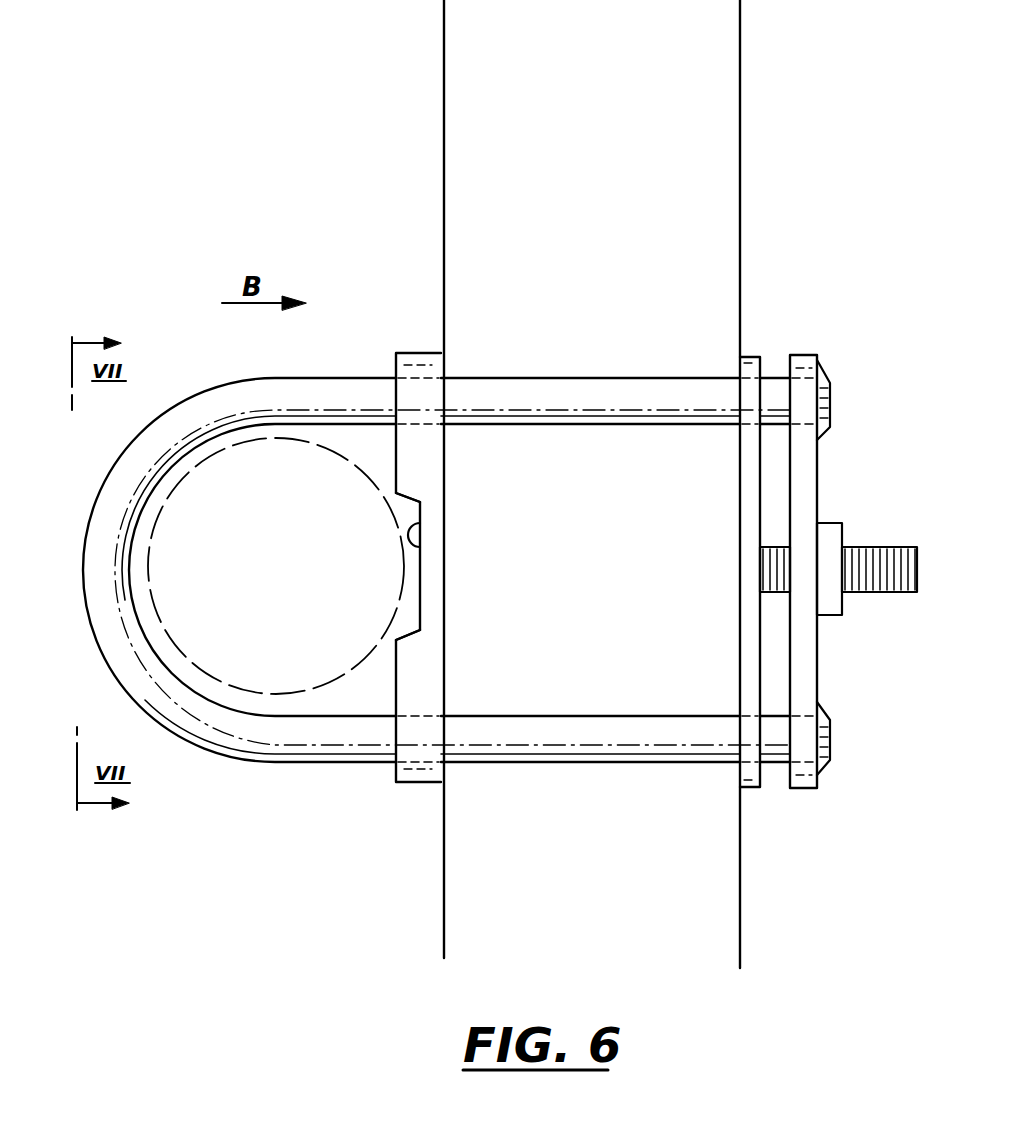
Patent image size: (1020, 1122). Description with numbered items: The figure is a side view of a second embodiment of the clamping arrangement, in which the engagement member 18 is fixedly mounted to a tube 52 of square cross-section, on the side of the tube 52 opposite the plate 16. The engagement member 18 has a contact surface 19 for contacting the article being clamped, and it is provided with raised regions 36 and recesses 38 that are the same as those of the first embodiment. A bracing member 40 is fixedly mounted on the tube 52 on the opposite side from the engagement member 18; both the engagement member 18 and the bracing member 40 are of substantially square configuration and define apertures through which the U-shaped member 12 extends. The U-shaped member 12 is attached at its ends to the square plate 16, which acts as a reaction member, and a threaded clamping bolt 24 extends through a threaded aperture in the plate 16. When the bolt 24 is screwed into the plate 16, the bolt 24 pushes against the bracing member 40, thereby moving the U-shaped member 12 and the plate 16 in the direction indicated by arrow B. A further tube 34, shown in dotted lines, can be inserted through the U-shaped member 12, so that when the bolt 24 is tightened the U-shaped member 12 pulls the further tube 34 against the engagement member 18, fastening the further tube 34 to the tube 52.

The tube 52 is at (705, 108).
The first U-shaped member 12 is at (607, 380).
The raised region 36 is at (388, 356).
The recess 38 is at (410, 546).
The engagement member 18 is at (392, 492).
The contact surface 19 is at (420, 610).
The further tube 34 is at (330, 684).
The bracing member 40 is at (750, 472).
The plate 16 is at (812, 665).
The clamping bolt 24 is at (867, 555).